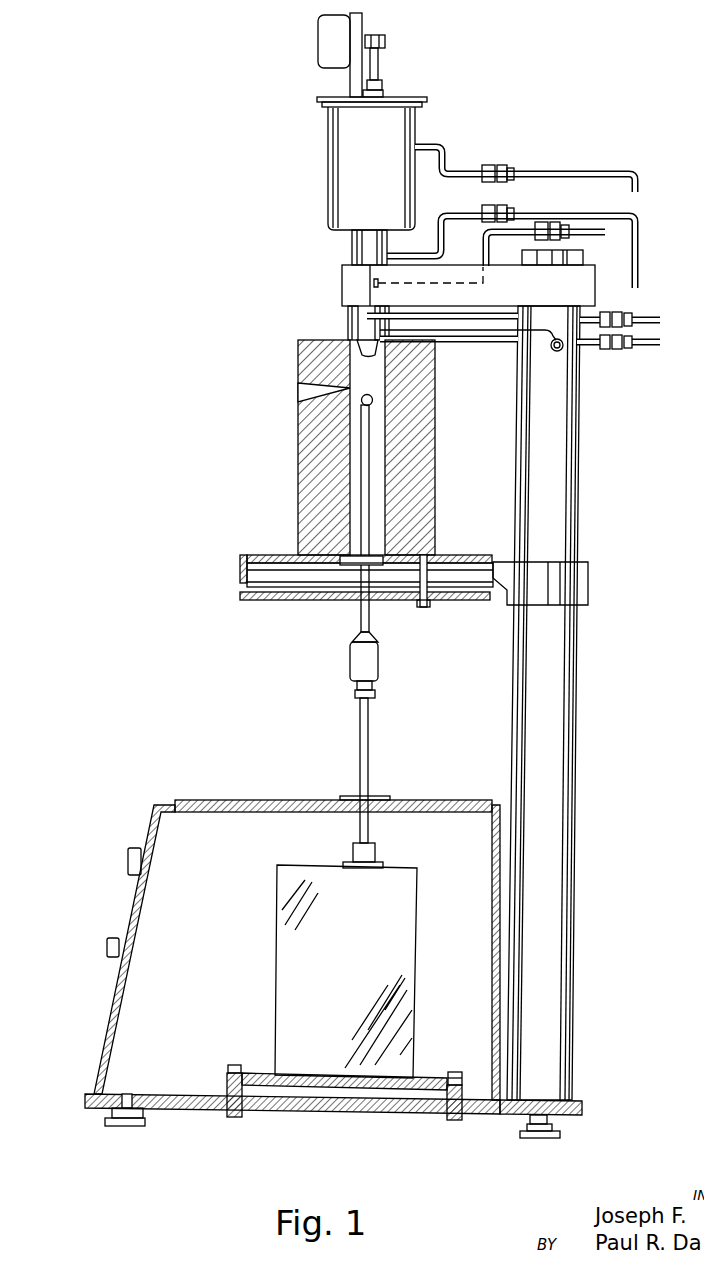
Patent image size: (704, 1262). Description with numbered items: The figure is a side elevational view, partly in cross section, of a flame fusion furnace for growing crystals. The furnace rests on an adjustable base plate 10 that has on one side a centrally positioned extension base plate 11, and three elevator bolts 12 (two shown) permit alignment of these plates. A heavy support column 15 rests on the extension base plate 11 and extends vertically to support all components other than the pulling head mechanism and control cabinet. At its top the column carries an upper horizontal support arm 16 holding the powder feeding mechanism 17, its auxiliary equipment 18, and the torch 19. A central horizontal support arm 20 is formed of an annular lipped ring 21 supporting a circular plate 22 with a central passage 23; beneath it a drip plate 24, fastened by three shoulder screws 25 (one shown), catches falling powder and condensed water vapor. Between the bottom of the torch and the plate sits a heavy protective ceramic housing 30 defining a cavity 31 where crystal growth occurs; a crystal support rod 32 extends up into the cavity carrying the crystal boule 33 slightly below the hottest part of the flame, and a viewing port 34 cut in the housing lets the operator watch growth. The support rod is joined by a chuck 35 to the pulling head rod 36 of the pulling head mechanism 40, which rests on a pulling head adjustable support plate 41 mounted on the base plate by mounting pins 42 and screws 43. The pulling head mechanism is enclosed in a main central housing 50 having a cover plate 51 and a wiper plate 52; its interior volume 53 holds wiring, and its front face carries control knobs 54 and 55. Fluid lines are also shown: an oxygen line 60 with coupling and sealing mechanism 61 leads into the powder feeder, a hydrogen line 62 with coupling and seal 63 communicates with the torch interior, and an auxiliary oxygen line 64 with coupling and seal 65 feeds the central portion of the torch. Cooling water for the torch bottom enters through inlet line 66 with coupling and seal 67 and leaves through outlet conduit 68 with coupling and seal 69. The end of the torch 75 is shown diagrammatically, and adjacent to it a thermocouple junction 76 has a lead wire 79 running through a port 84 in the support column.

The adjustable base plate 10 is at (346, 1116).
The central extension base plate 11 is at (583, 1108).
The elevator bolts 12 is at (125, 1128).
The support column 15 is at (555, 762).
The upper horizontal support arm 16 is at (350, 283).
The powder feeding mechanism 17 is at (347, 166).
The auxiliary equipment 18 is at (311, 37).
The torch 19 is at (375, 246).
The central horizontal support arm 20 is at (582, 588).
The annular lipped ring 21 is at (243, 570).
The circular plate 22 is at (265, 555).
The central passage 23 is at (395, 558).
The drip plate 24 is at (258, 602).
The shoulder screws 25 is at (424, 605).
The protective ceramic housing 30 is at (322, 449).
The cavity 31 is at (378, 385).
The crystal support rod 32 is at (370, 467).
The crystal boule 33 is at (372, 402).
The viewing port 34 is at (307, 397).
The chuck 35 is at (372, 665).
The pulling head rod 36 is at (366, 747).
The pulling head mechanism 40 is at (355, 962).
The pulling head adjustable support plate 41 is at (262, 1074).
The mounting pins 42 is at (227, 1088).
The screws 43 is at (233, 1065).
The main central housing 50 is at (120, 912).
The cover plate 51 is at (228, 802).
The wiper plate 52 is at (377, 800).
The volume 53 is at (218, 917).
The control knob 54 is at (128, 860).
The control knob 55 is at (81, 945).
The oxygen line 60 is at (456, 170).
The coupling and sealing mechanism 61 is at (510, 168).
The hydrogen line 62 is at (448, 213).
The coupling and seal 63 is at (515, 210).
The auxiliary oxygen line 64 is at (598, 234).
The coupling and seal 65 is at (565, 226).
The cooling water inlet line 66 is at (640, 348).
The coupling and seal 67 is at (598, 348).
The outlet conduit 68 is at (650, 320).
The coupling and seal 69 is at (620, 316).
The end of the torch 75 is at (350, 352).
The thermocouple junction 76 is at (375, 338).
The lead wire 79 is at (486, 332).
The port 84 is at (560, 352).